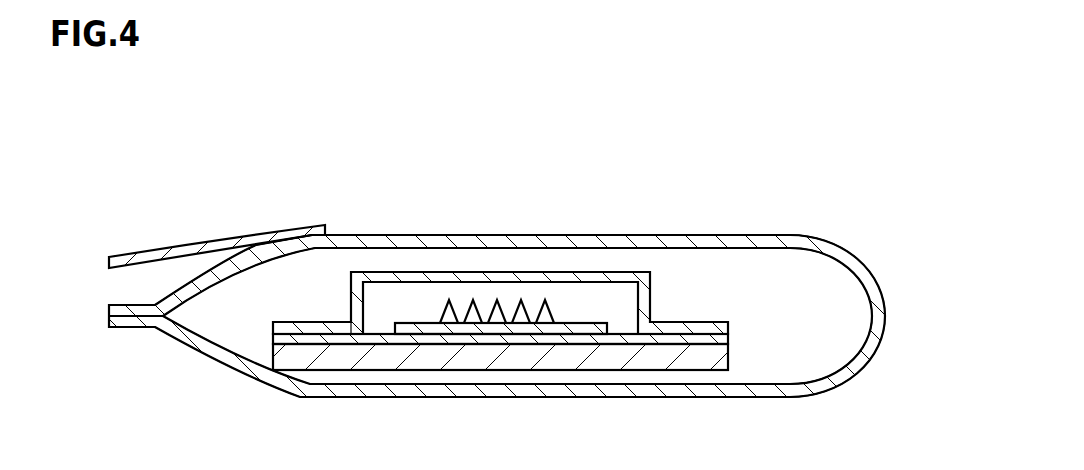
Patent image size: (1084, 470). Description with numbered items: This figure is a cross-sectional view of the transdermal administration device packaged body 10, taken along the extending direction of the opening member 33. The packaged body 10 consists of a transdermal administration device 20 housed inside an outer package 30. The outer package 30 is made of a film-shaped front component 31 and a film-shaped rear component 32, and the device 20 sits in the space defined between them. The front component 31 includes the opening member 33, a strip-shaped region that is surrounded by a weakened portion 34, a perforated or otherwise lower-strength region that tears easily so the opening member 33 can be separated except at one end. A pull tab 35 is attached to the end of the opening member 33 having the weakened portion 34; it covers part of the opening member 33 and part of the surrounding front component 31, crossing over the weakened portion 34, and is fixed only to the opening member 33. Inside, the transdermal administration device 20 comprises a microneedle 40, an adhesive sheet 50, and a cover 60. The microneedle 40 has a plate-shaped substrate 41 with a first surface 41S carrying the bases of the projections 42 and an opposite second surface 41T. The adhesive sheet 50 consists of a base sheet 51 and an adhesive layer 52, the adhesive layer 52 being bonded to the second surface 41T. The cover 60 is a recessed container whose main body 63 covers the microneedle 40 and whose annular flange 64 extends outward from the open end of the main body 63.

The transdermal administration device packaged body 10 is at (153, 132).
The transdermal administration device 20 is at (757, 308).
The outer package 30 is at (885, 308).
The front component 31 is at (761, 235).
The rear component 32 is at (717, 397).
The opening member 33 is at (668, 235).
The weakened portion 34 is at (253, 250).
The pull tab 35 is at (180, 247).
The microneedle 40 is at (623, 203).
The substrate 41 is at (581, 322).
The first surface 41S is at (408, 322).
The second surface 41T is at (446, 330).
The projection 42 is at (562, 320).
The adhesive sheet 50 is at (143, 360).
The base sheet 51 is at (268, 363).
The adhesive layer 52 is at (268, 340).
The cover 60 is at (652, 298).
The main body 63 is at (351, 290).
The flange 64 is at (297, 320).